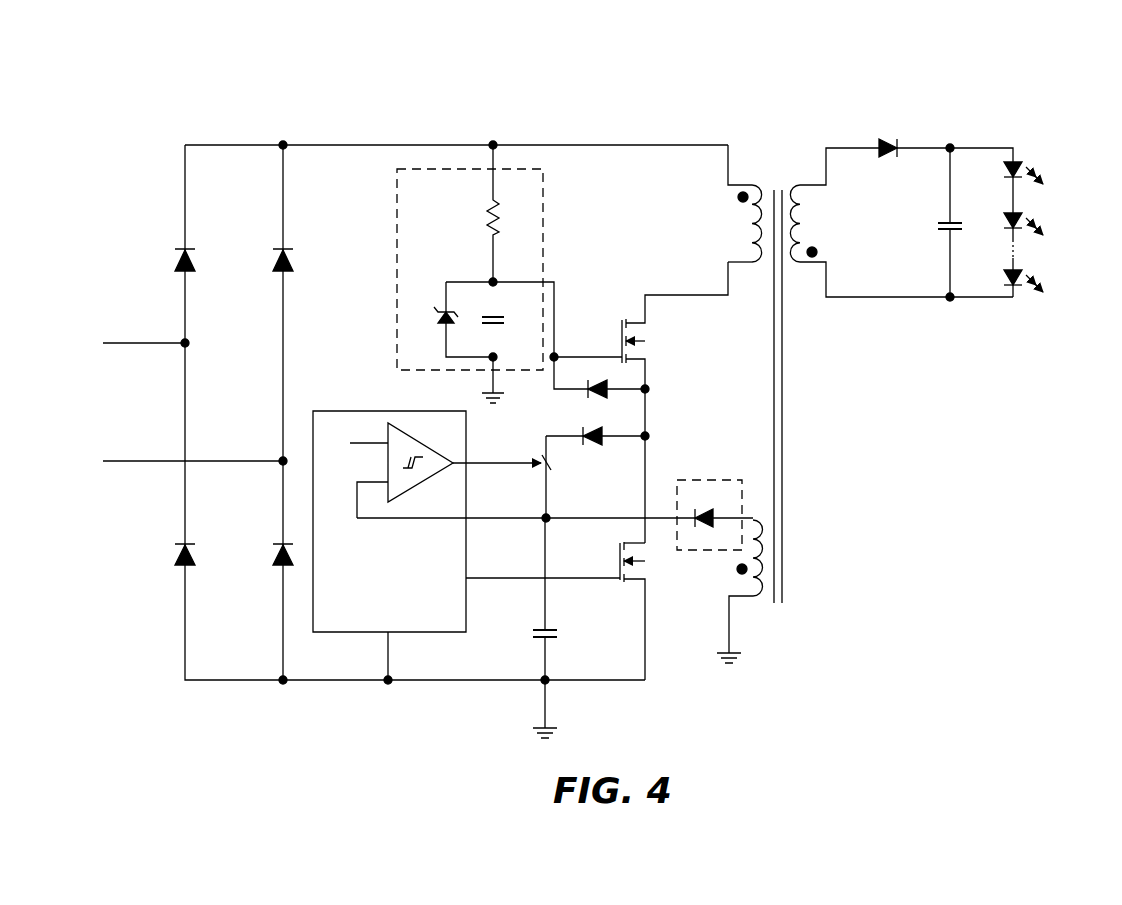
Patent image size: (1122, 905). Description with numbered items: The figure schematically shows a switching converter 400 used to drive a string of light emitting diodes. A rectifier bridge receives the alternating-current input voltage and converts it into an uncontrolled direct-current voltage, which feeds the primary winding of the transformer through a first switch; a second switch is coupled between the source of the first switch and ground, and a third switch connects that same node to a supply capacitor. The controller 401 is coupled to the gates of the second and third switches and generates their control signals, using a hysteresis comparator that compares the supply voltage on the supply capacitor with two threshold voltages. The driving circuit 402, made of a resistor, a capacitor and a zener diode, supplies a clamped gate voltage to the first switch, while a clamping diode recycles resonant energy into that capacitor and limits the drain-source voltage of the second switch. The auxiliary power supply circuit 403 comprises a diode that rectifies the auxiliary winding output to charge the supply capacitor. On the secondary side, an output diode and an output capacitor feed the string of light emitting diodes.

The switching converter 400 is at (1022, 88).
The controller 401 is at (362, 410).
The driving circuit 402 is at (397, 243).
The auxiliary power supply circuit 403 is at (720, 480).